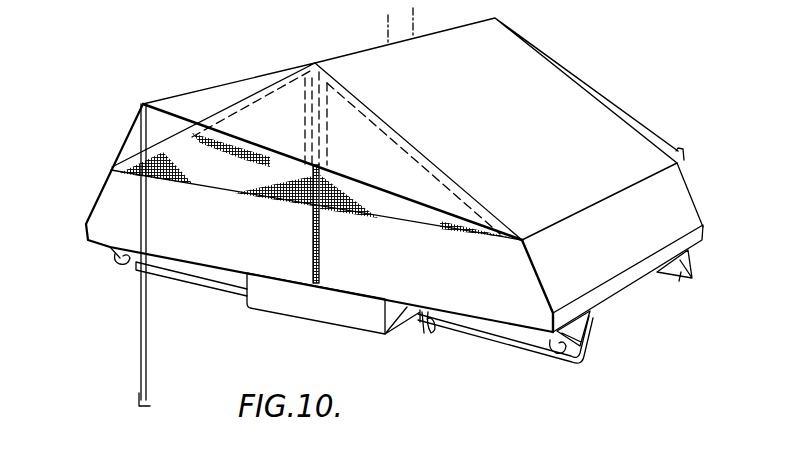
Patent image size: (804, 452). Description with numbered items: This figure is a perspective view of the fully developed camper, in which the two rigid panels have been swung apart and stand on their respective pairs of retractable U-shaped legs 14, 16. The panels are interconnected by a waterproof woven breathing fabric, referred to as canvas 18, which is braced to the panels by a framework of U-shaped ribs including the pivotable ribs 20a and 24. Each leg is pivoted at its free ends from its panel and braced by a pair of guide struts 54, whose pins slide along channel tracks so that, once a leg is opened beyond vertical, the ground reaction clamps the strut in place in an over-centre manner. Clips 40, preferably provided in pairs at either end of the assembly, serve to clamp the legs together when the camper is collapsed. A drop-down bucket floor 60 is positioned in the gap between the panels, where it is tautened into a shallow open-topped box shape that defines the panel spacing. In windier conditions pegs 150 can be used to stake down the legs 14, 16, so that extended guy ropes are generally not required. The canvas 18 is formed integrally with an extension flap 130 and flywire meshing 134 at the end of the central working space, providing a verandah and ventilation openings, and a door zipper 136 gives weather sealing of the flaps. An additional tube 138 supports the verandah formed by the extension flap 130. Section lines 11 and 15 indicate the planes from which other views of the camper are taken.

The section line 11 is at (428, 16).
The retractable U-shaped leg 14 is at (185, 283).
The section line 15 is at (122, 107).
The retractable U-shaped leg 16 is at (388, 28).
The canvas 18 is at (578, 136).
The pivotable U-shaped rib 20a is at (729, 153).
The pivotable U-shaped rib 24 is at (317, 62).
The clip 40 is at (431, 333).
The guide strut 54 is at (583, 332).
The drop-down bucket floor 60 is at (343, 318).
The extension flap 130 is at (173, 110).
The meshing 134 is at (203, 167).
The door zipper 136 is at (313, 272).
The additional tube 138 is at (143, 317).
The peg 150 is at (123, 268).